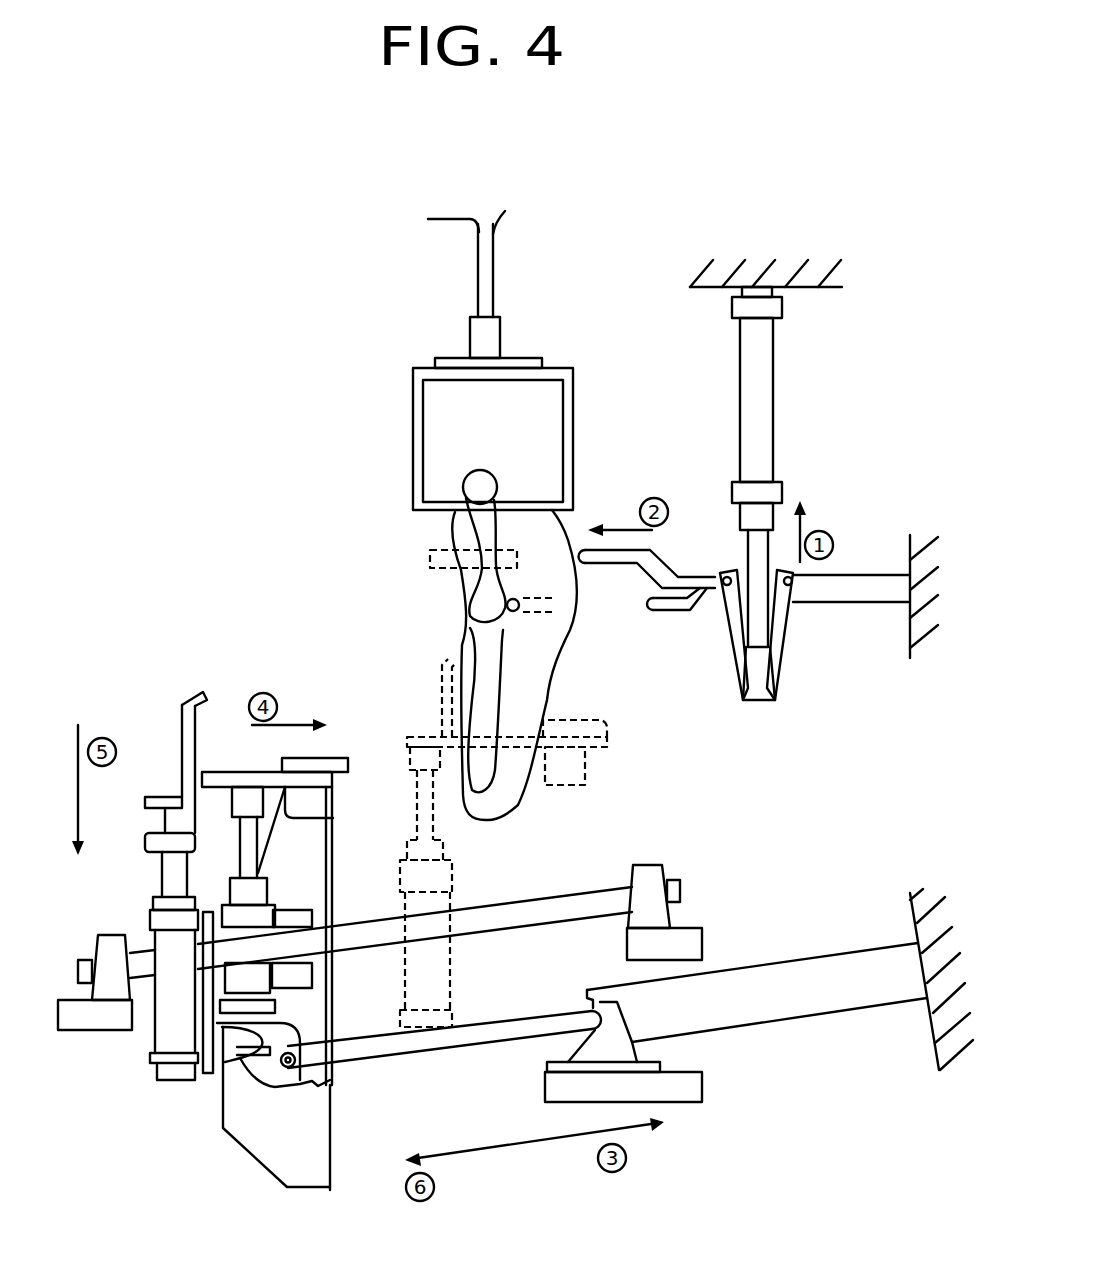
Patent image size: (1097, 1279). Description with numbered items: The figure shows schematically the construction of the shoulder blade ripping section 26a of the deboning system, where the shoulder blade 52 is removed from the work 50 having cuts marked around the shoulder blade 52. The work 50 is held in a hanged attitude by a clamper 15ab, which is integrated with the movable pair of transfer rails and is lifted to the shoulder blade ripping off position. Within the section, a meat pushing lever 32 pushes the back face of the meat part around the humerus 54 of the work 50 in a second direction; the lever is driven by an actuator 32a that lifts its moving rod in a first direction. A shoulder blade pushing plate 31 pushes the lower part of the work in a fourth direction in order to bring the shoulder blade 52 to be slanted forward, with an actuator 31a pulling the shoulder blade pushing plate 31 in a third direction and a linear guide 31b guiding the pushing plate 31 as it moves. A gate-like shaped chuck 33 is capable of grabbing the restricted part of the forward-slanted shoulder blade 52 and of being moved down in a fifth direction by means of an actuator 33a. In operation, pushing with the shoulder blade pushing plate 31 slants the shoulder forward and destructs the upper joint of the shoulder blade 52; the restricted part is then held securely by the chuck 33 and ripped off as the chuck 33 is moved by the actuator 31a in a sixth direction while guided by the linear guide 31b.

The clamper 15ab is at (573, 480).
The shoulder blade ripping section 26a is at (880, 294).
The actuator 32a is at (758, 455).
The meat pushing lever 32 is at (602, 560).
The work 50 is at (537, 697).
The shoulder blade 52 is at (487, 650).
The humerus 54 is at (490, 593).
The chuck 33 is at (187, 702).
The actuator 33a is at (158, 1033).
The shoulder blade pushing plate 31 is at (322, 758).
The actuator 31a is at (737, 1023).
The linear guide 31b is at (545, 898).